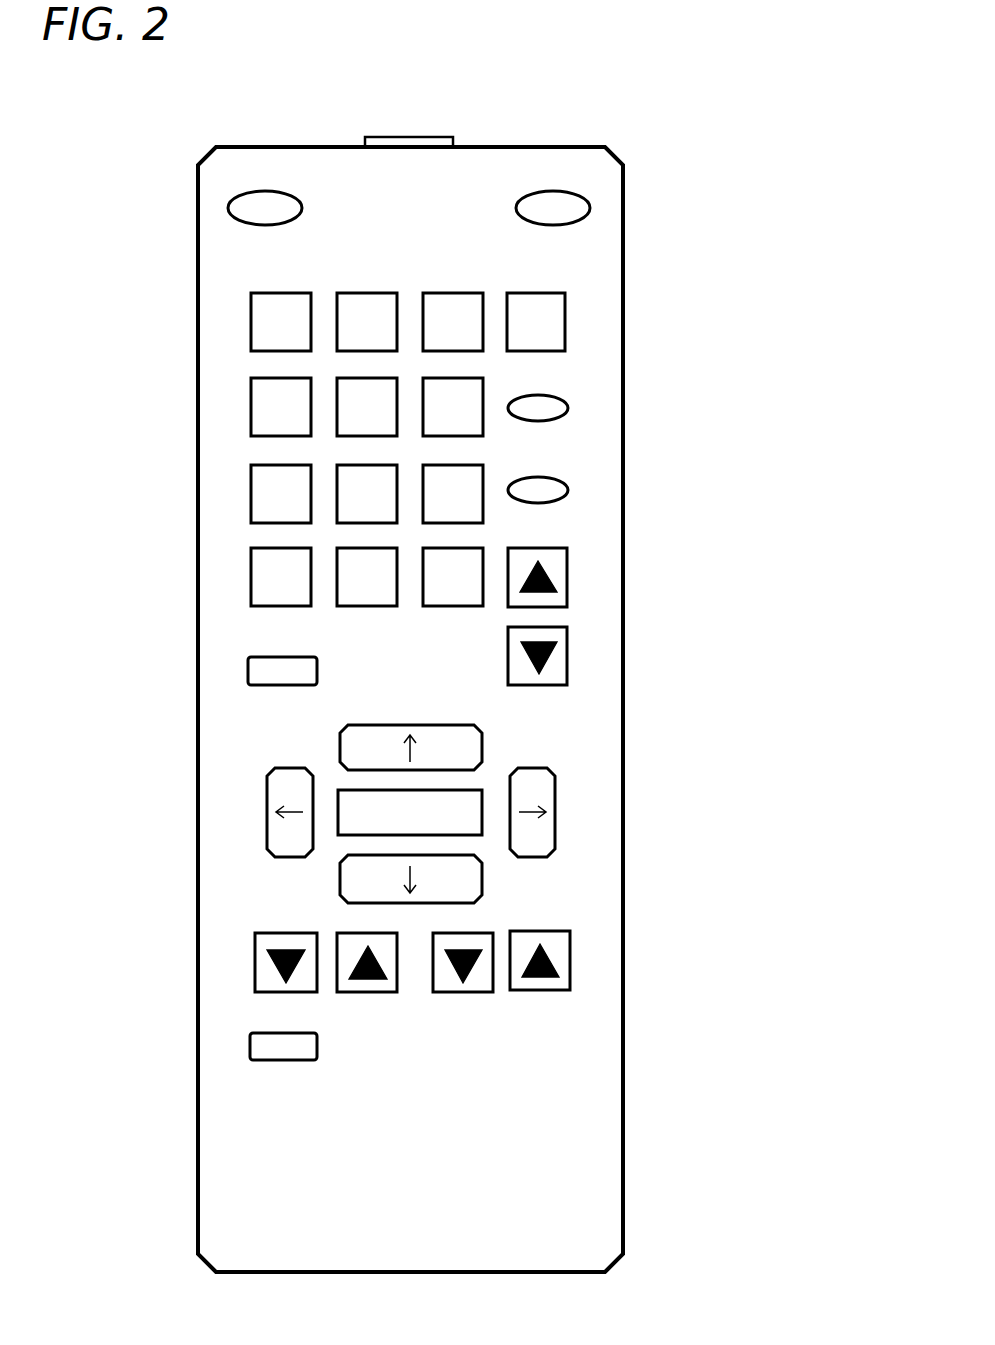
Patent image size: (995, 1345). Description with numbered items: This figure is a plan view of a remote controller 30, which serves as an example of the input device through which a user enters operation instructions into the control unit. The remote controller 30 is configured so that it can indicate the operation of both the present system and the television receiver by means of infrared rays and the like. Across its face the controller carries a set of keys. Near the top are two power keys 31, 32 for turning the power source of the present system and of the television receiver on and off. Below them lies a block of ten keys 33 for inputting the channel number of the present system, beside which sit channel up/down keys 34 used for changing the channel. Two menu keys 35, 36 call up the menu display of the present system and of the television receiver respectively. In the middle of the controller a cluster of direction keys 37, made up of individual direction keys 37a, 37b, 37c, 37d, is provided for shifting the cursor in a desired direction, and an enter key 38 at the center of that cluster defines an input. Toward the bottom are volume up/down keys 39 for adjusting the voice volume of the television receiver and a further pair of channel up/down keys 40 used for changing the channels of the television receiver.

The remote controller 30 is at (462, 61).
The power key 31 is at (550, 191).
The power key 32 is at (272, 191).
The ten keys 33 is at (253, 270).
The channel up/down keys 34 is at (575, 538).
The menu key 35 is at (248, 672).
The menu key 36 is at (250, 1047).
The direction keys 37 is at (594, 843).
The direction key 37a is at (482, 742).
The direction key 37b is at (482, 878).
The direction key 37c is at (267, 812).
The direction key 37d is at (555, 796).
The enter key 38 is at (345, 836).
The volume up/down keys 39 is at (255, 1013).
The channel up/down keys 40 is at (573, 1013).